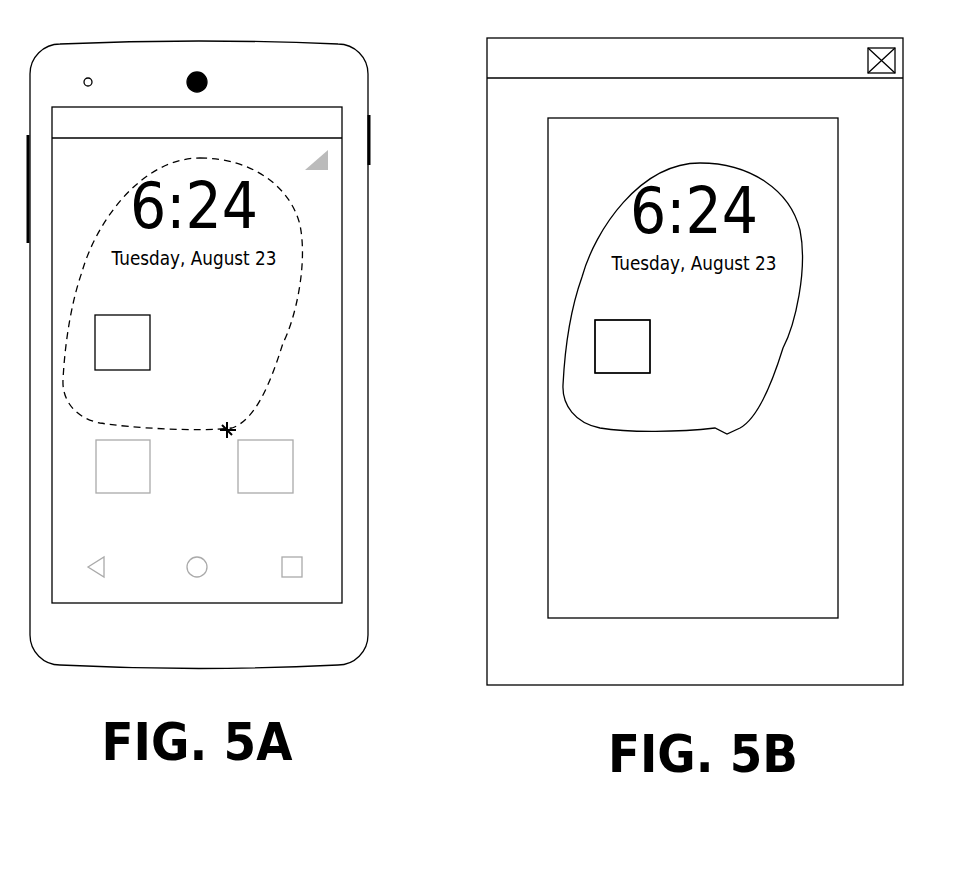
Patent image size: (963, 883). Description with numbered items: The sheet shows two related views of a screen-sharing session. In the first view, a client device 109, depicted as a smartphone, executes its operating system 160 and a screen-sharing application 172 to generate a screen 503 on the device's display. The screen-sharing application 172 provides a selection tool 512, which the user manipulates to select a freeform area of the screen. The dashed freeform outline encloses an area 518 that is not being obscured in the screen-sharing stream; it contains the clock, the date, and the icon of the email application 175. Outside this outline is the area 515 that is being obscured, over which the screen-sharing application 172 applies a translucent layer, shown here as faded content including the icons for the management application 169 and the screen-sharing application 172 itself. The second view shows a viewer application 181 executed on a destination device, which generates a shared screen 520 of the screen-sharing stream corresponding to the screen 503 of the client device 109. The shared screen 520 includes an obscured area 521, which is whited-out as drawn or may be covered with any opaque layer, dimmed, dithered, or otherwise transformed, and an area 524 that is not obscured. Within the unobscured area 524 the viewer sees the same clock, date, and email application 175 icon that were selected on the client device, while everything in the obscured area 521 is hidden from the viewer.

In FIG. 5A, the client device 109 is at (297, 43).
In FIG. 5A, the screen 503 is at (342, 167).
In FIG. 5A, the operating system 160 is at (197, 142).
In FIG. 5A, the area that is not being obscured 518 is at (250, 343).
In FIG. 5A, the selection tool 512 is at (236, 430).
In FIG. 5A, the area that is being obscured 515 is at (253, 483).
In FIG. 5A, the email application 175 is at (131, 365).
In FIG. 5B, the email application 175 is at (633, 370).
In FIG. 5A, the management application 169 is at (138, 490).
In FIG. 5A, the screen-sharing application 172 is at (277, 521).
In FIG. 5B, the viewer application 181 is at (695, 361).
In FIG. 5B, the shared screen 520 is at (548, 146).
In FIG. 5B, the obscured area 521 is at (580, 202).
In FIG. 5B, the area that is not obscured 524 is at (618, 305).